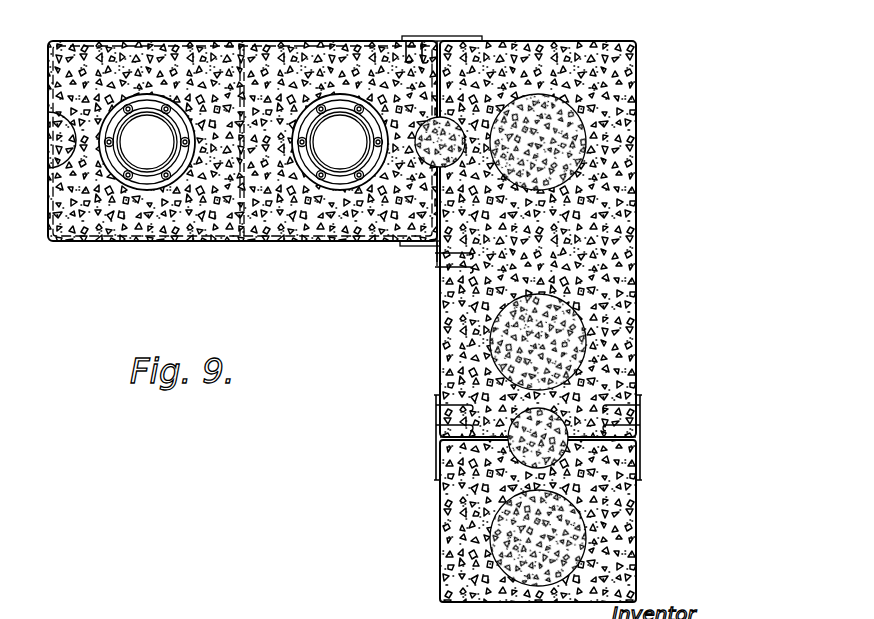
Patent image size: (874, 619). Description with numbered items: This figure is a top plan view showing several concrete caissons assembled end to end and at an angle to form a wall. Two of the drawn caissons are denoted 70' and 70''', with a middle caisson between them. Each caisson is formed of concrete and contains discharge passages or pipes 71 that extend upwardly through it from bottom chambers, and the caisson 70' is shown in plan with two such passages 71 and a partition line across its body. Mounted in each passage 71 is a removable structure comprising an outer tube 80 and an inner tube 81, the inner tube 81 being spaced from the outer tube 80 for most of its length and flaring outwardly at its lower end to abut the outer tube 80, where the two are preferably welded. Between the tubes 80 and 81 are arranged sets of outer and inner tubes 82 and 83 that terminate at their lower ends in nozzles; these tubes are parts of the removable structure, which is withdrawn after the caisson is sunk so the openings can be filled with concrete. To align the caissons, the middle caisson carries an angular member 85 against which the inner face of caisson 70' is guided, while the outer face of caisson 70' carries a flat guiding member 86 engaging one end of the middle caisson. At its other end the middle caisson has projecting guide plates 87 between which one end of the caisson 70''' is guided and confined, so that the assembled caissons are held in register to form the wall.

The caisson 70' is at (242, 176).
The caisson 70''' is at (568, 321).
The discharge passage 71 is at (291, 56).
The outer tube 80 is at (141, 94).
The inner tube 81 is at (151, 108).
The outer tube 82 is at (147, 142).
The inner tube 83 is at (109, 141).
The angular member 85 is at (424, 250).
The flat guiding member 86 is at (461, 40).
The projecting guide plate 87 is at (436, 456).